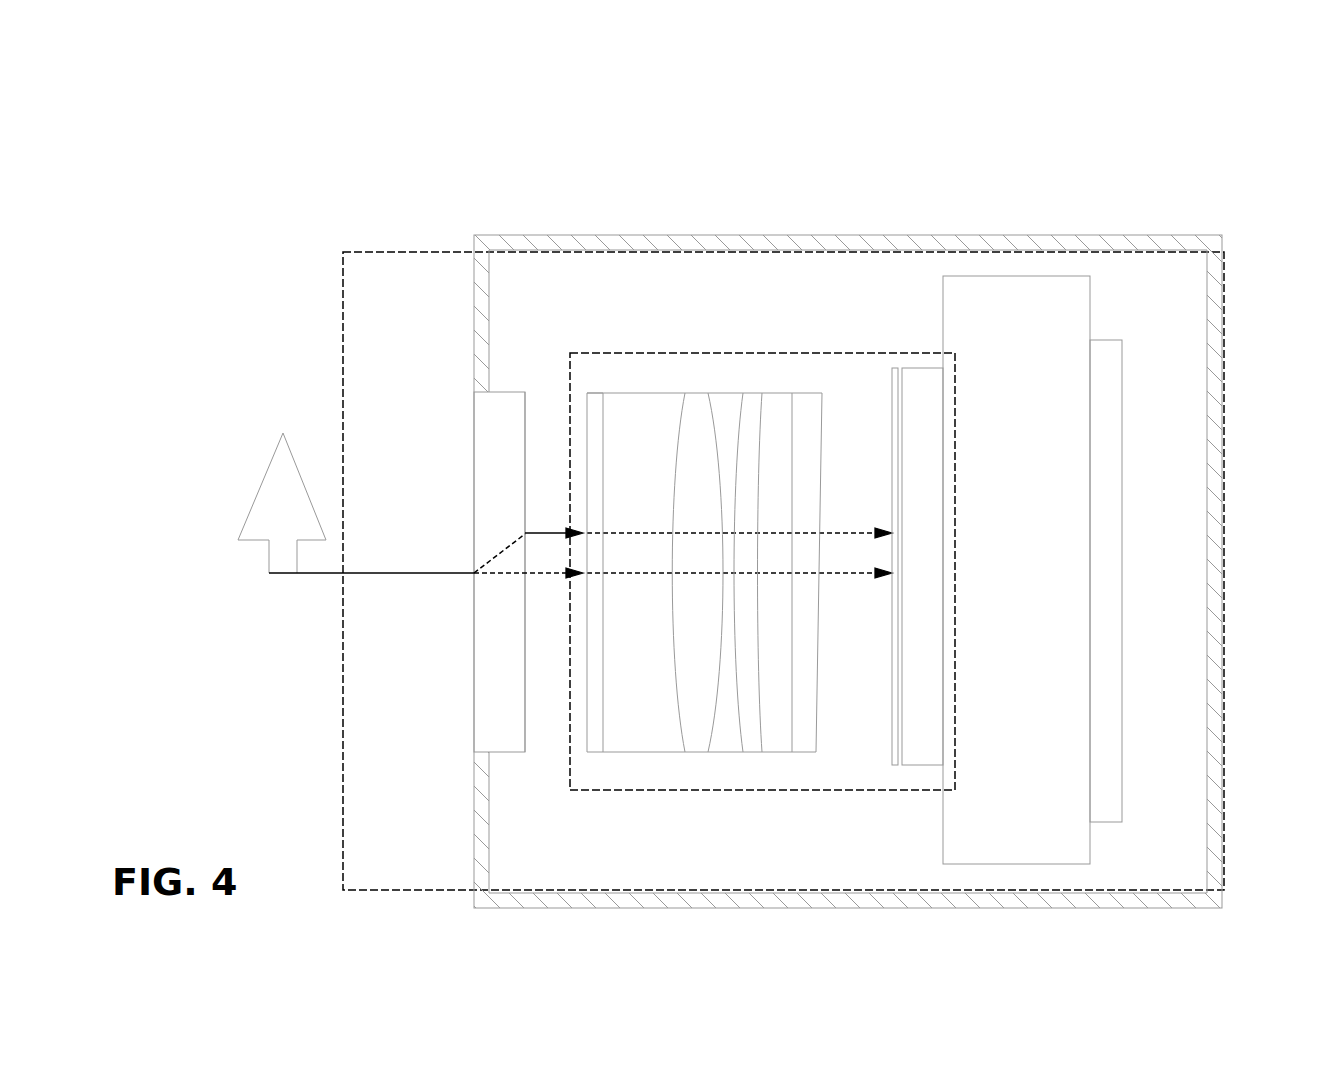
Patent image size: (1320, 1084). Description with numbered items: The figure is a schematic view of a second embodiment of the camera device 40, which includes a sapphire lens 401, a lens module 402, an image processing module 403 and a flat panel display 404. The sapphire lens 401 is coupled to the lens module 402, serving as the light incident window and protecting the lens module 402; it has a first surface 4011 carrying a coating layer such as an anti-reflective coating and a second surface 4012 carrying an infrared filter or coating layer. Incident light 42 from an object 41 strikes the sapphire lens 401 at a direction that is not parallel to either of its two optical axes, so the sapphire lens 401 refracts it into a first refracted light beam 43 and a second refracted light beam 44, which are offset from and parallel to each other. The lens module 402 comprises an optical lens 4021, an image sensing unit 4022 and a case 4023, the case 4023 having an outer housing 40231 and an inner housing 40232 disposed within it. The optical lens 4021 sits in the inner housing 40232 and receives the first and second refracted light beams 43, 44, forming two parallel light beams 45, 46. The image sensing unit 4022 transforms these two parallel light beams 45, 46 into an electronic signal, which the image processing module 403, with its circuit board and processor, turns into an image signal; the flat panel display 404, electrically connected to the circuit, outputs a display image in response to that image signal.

The camera device 40 is at (1226, 750).
The sapphire lens 401 is at (513, 753).
The first surface 4011 is at (474, 425).
The second surface 4012 is at (526, 394).
The lens module 402 is at (880, 115).
The optical lens 4021 is at (777, 393).
The image sensing unit 4022 is at (911, 378).
The case 4023 is at (848, 135).
The outer housing 40231 is at (620, 238).
The inner housing 40232 is at (705, 365).
The image processing module 403 is at (1013, 277).
The flat panel display 404 is at (1122, 583).
The object 41 is at (262, 478).
The incident light 42 is at (393, 575).
The first refracted light beam 43 is at (552, 530).
The second refracted light beam 44 is at (549, 577).
The parallel light beam 45 is at (852, 530).
The parallel light beam 46 is at (849, 577).